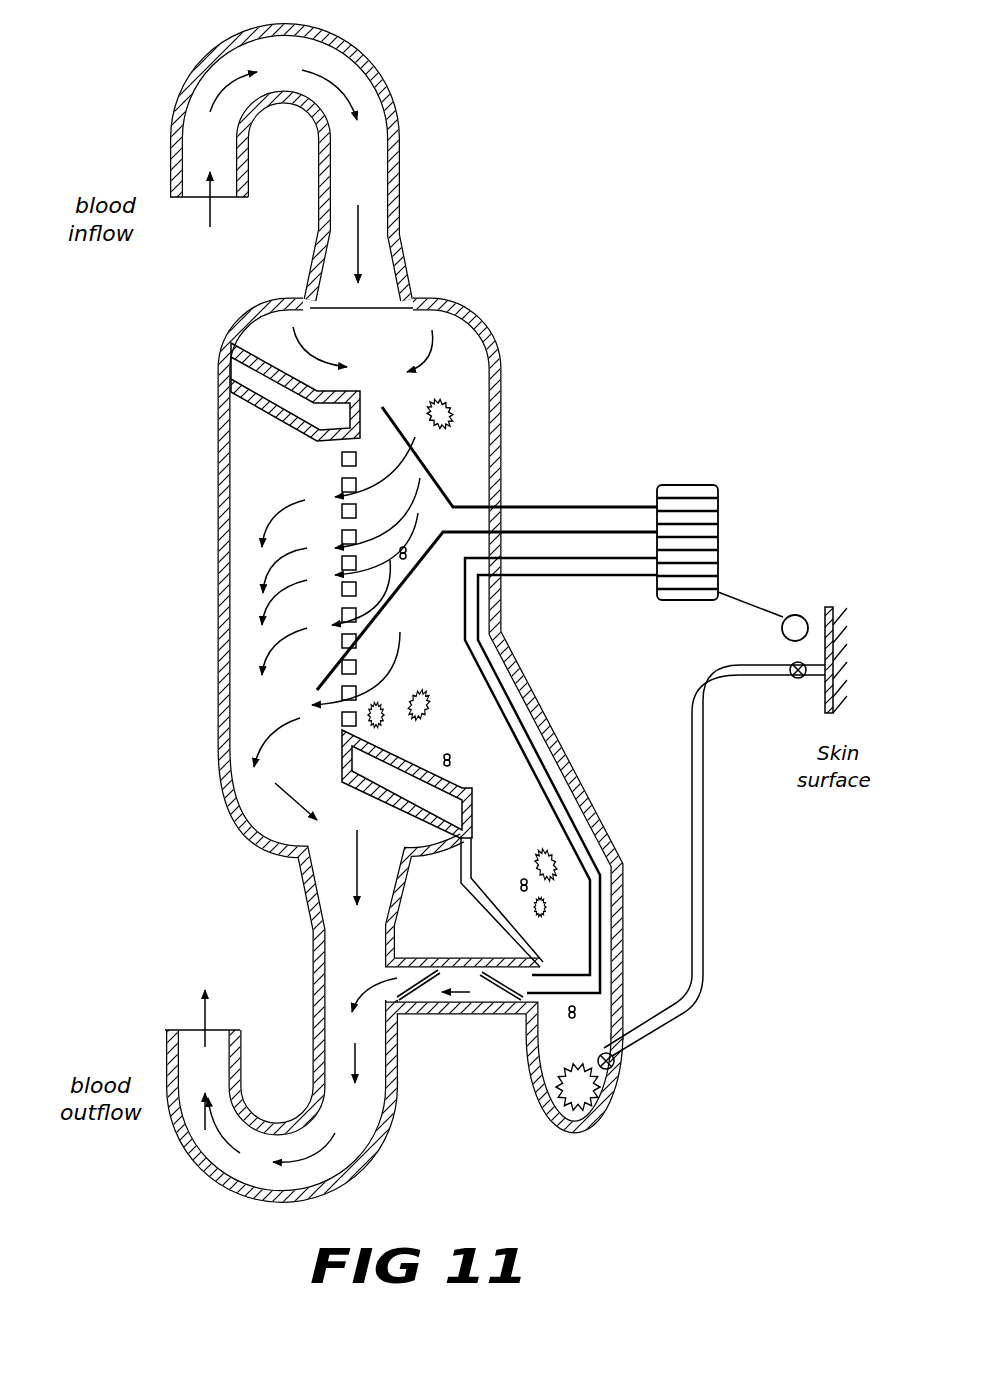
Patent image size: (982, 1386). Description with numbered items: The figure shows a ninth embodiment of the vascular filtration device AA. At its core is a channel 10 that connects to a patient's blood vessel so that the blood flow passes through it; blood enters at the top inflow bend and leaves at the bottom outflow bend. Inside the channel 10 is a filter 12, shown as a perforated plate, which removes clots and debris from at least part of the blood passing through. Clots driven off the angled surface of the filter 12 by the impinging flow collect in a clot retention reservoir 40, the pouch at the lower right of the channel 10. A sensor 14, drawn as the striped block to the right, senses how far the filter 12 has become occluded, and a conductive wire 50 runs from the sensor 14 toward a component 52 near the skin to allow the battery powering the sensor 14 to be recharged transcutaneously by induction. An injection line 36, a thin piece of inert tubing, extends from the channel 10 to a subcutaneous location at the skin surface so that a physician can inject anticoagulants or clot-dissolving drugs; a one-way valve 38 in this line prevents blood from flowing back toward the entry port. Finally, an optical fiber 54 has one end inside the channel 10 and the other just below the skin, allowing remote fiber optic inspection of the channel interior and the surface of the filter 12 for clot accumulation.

The channel 10 is at (490, 306).
The filter 12 is at (340, 470).
The sensor 14 is at (727, 545).
The injection line 36 is at (553, 775).
The one-way valve 38 is at (792, 691).
The clot retention reservoir 40 is at (630, 1123).
The conductive wire 50 is at (743, 619).
The sensor/power unit 52 is at (803, 607).
The optical fiber 54 is at (711, 867).
The vascular filtration device AA is at (630, 124).